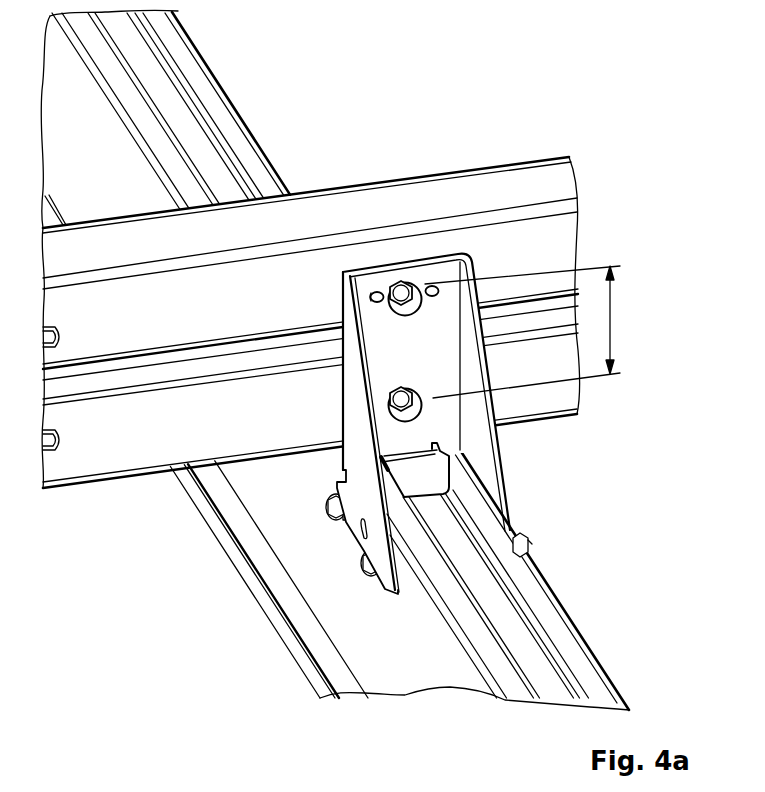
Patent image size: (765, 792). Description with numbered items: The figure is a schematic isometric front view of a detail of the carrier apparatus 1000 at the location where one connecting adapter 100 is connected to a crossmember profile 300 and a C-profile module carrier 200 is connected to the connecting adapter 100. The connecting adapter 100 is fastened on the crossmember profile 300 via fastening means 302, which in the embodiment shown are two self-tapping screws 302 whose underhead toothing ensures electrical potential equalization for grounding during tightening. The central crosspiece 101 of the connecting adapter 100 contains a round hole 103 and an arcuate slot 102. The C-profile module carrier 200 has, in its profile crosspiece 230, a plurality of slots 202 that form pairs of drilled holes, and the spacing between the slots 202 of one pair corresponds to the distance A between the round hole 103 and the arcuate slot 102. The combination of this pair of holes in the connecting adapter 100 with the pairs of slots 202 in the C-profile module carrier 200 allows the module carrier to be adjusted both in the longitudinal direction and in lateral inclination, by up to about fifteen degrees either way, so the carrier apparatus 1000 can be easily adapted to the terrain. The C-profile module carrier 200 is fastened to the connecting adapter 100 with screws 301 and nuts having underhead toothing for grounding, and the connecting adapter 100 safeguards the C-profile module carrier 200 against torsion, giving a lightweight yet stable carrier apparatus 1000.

The carrier apparatus 1000 is at (356, 360).
The connecting adapter 100 is at (490, 359).
The central crosspiece 101 is at (437, 365).
The arcuate slot 102 is at (372, 292).
The round hole 103 is at (440, 406).
The C-profile module carrier 200 is at (350, 286).
The slots 202 is at (423, 283).
The profile crosspiece 230 is at (538, 252).
The crossmember profile 300 is at (341, 360).
The screws 301 is at (400, 284).
The fastening means 302 is at (528, 545).
The distance A is at (612, 320).